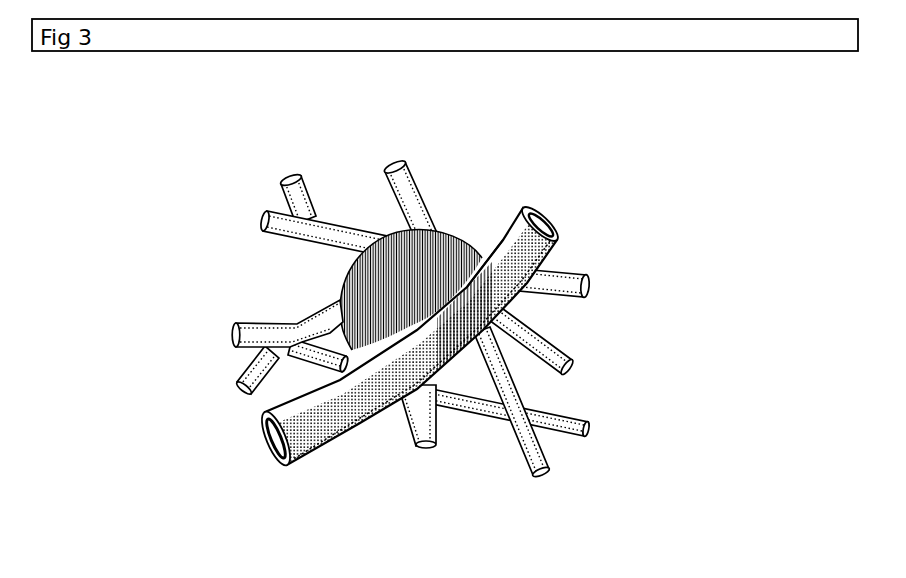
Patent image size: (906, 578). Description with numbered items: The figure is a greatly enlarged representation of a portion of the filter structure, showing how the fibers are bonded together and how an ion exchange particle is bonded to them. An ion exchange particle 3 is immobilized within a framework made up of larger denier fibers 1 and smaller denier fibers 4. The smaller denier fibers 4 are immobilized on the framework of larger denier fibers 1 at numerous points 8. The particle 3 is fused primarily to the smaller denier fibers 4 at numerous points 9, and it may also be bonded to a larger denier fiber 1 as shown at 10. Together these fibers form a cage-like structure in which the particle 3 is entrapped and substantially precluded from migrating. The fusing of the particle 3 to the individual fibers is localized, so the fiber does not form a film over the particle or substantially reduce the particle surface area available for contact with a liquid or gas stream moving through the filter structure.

The larger denier fiber 1 is at (502, 250).
The ion exchange particle 3 is at (381, 238).
The smaller denier fiber 4 is at (268, 334).
The immobilization point 8 is at (338, 365).
The fusing point 9 is at (431, 392).
The bond to larger denier fiber 10 is at (478, 252).